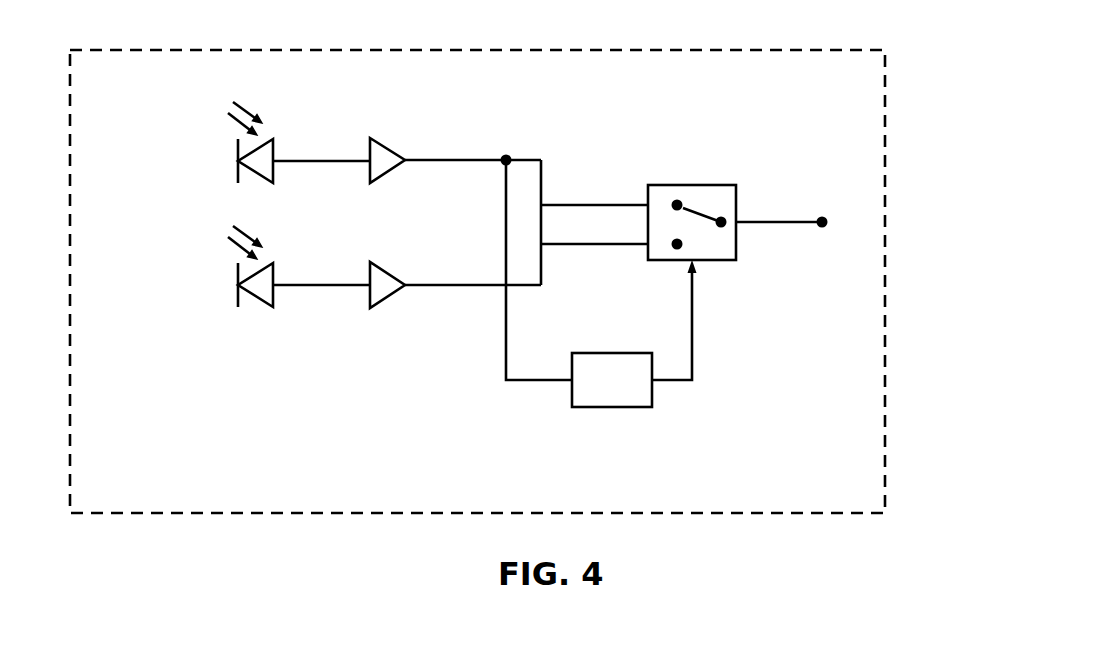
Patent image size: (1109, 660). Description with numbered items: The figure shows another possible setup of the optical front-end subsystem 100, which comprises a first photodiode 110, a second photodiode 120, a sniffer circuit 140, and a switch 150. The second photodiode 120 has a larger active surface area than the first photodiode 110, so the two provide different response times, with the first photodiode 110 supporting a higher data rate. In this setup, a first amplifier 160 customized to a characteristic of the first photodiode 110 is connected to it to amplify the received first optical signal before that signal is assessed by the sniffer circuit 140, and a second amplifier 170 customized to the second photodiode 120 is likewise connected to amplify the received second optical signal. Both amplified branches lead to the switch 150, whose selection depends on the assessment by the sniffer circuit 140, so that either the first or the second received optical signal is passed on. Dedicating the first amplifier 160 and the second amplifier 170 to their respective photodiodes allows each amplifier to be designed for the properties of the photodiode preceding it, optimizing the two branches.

The optical front-end subsystem 100 is at (900, 153).
The first photodiode 110 is at (222, 167).
The second photodiode 120 is at (223, 290).
The sniffer circuit 140 is at (617, 422).
The switch 150 is at (713, 175).
The first amplifier 160 is at (393, 142).
The second amplifier 170 is at (400, 264).